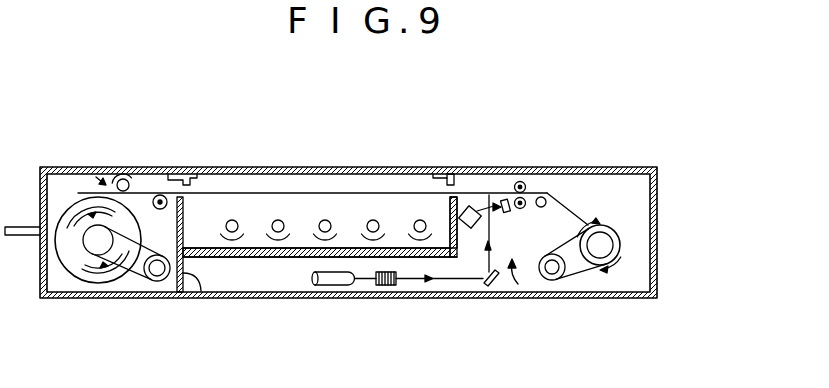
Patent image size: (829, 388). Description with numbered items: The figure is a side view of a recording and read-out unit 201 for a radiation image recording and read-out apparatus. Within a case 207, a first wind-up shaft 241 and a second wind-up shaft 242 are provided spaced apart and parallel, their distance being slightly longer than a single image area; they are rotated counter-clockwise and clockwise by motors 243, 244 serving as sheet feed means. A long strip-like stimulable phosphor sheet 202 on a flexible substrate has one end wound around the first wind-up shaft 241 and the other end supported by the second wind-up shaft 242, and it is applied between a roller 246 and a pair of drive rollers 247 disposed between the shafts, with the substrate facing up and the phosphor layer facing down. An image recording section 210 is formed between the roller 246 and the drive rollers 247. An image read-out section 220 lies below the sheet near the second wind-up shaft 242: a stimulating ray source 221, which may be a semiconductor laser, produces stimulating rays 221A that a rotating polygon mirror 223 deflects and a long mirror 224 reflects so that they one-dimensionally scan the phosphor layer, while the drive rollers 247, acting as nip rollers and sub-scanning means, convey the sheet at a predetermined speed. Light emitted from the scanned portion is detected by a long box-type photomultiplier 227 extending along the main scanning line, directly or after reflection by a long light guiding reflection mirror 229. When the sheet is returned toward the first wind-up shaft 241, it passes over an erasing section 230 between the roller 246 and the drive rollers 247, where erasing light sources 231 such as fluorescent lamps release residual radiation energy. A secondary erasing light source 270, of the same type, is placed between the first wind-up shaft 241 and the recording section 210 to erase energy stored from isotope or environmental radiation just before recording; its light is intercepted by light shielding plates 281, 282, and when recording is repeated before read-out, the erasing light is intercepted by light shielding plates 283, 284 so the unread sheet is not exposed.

The recording and read-out unit 201 is at (503, 158).
The stimulable phosphor sheet 202 is at (236, 191).
The case 207 is at (598, 167).
The image recording section 210 is at (371, 187).
The image read-out section 220 is at (517, 287).
The stimulating ray source 221 is at (314, 286).
The stimulating rays 221A is at (446, 280).
The rotating polygon mirror 223 is at (382, 286).
The long mirror 224 is at (491, 287).
The long photomultiplier 227 is at (470, 207).
The light guiding reflection mirror 229 is at (506, 213).
The erasing section 230 is at (326, 176).
The erasing light sources 231 is at (238, 221).
The first wind-up shaft 241 is at (90, 283).
The second wind-up shaft 242 is at (604, 268).
The motor 243 is at (157, 297).
The motor 244 is at (552, 282).
The roller 246 is at (143, 166).
The drive rollers 247 is at (524, 181).
The secondary erasing light source 270 is at (97, 166).
The light shielding plate 281 is at (165, 170).
The light shielding plate 282 is at (201, 292).
The light shielding plate 283 is at (443, 167).
The light shielding plate 284 is at (437, 167).